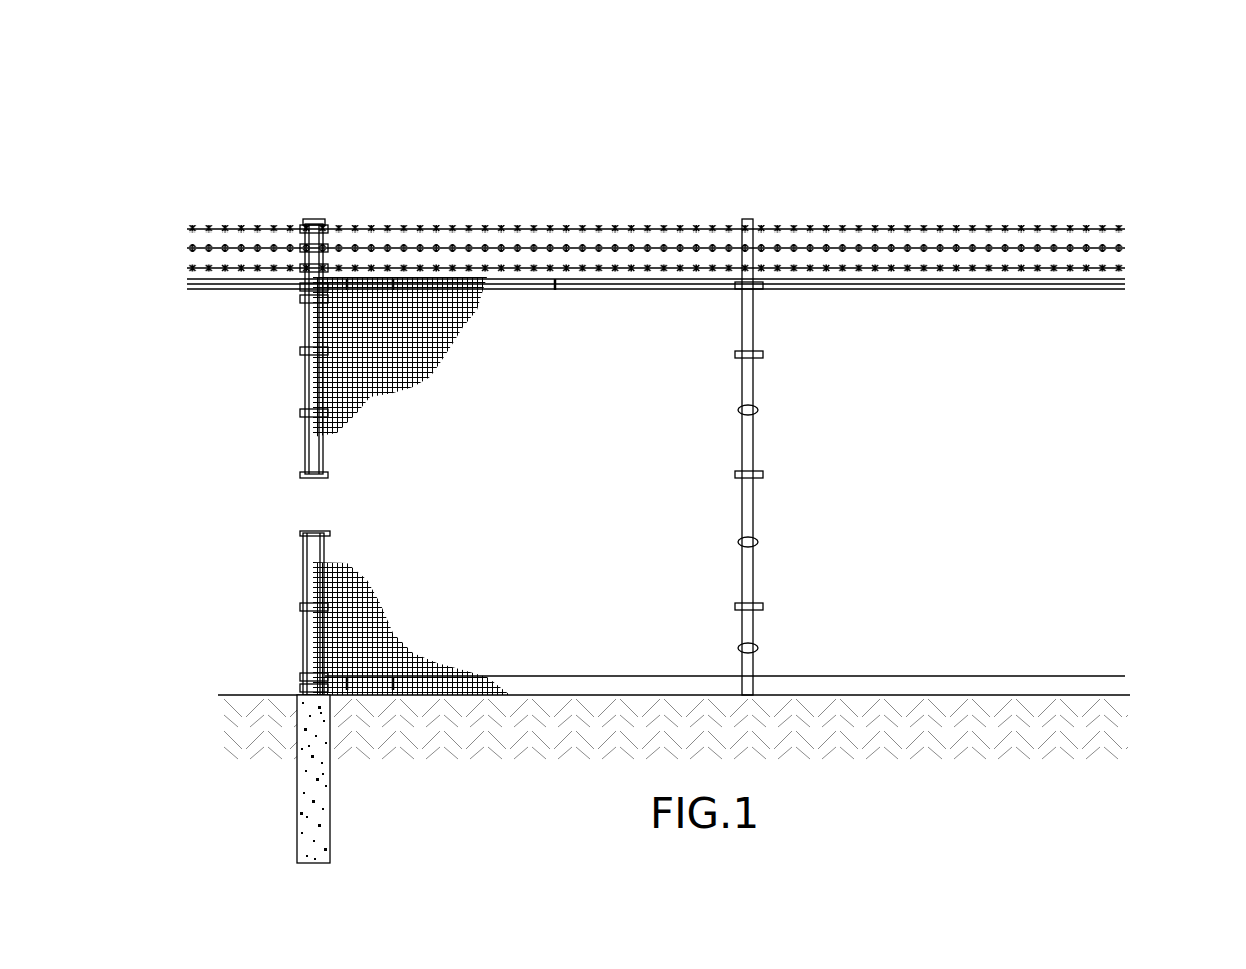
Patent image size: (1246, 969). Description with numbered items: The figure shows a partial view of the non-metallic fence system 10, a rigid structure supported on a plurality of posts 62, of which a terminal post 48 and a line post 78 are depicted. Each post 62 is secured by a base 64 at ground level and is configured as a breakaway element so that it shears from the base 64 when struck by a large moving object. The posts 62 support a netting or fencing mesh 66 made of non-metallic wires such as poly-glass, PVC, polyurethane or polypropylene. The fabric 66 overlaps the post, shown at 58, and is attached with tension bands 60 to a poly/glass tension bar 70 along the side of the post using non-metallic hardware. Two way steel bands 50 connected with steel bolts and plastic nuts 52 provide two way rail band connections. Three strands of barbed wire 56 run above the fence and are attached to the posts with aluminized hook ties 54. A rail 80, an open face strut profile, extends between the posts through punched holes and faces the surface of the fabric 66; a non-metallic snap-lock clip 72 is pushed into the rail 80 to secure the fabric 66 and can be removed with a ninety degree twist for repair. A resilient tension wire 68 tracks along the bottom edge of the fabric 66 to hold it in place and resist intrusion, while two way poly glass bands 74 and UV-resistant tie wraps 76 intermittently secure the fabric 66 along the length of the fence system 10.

The non-metallic fence system 10 is at (1137, 163).
The two way steel bands 50 is at (303, 226).
The steel bolts and plastic nuts 52 is at (332, 285).
The aluminized hook ties 54 is at (757, 247).
The barbed wire 56 is at (900, 230).
The fabric overlap connection 58 is at (315, 377).
The tension bands 60 is at (307, 413).
The posts 62 is at (743, 523).
The terminal posts 48 is at (310, 590).
The line posts 78 is at (677, 540).
The base 64 is at (297, 823).
The fencing mesh 66 is at (433, 697).
The tension wire 68 is at (588, 680).
The tension bar 70 is at (330, 475).
The snap-lock clip 72 is at (435, 277).
The non-metallic bands 74 is at (737, 291).
The tie wraps 76 is at (757, 409).
The rail 80 is at (987, 287).